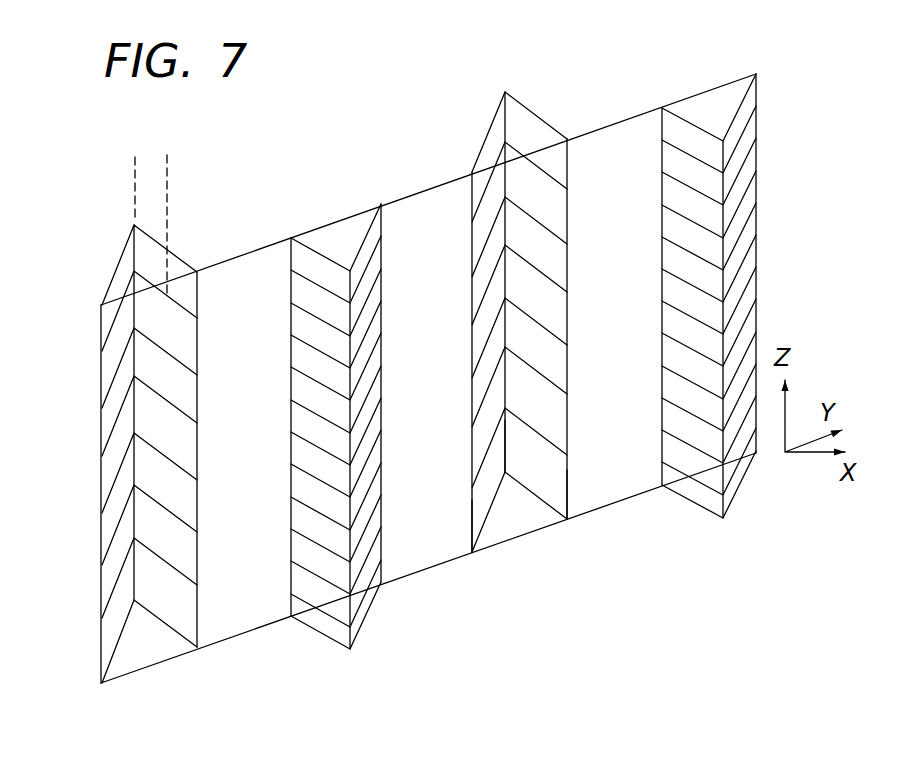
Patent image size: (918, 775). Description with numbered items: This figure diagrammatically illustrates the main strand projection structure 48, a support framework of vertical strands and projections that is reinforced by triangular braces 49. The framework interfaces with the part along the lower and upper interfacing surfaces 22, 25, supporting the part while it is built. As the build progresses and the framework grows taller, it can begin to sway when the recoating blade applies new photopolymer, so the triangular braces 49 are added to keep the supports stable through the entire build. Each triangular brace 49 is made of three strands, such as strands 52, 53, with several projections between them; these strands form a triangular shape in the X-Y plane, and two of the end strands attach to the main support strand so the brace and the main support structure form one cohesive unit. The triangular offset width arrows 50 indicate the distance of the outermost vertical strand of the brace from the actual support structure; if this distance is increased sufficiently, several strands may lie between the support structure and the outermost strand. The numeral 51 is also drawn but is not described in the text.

The lower interfacing surface 22 is at (412, 197).
The upper interfacing surface 25 is at (607, 505).
The main strand projection structure 48 is at (676, 73).
The triangular braces 49 is at (547, 100).
The triangular offset width arrows 50 is at (134, 183).
The fin side wall 51 is at (470, 518).
The main strand 52 is at (565, 495).
The main strand 53 is at (505, 445).